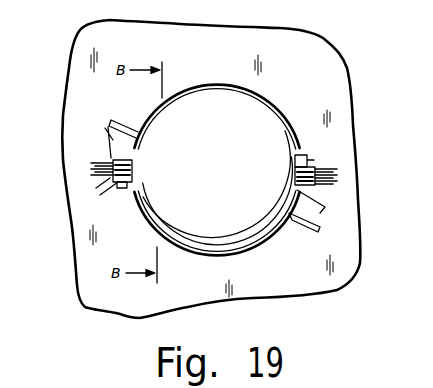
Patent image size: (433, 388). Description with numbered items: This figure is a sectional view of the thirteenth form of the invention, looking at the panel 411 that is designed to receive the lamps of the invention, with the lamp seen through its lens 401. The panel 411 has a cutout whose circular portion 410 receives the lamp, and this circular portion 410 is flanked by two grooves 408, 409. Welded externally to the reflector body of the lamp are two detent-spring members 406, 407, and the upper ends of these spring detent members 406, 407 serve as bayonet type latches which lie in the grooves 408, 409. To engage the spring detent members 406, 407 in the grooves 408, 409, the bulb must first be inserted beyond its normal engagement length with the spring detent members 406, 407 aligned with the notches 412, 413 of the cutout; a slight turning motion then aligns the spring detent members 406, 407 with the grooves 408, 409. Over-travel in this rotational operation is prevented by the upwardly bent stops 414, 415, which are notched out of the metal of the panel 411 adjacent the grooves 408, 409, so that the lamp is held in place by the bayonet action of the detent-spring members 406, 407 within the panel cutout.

The lens 401 is at (248, 122).
The detent-spring member 406 is at (108, 181).
The detent-spring member 407 is at (317, 164).
The groove 408 is at (100, 163).
The groove 409 is at (340, 178).
The circular portion 410 is at (257, 247).
The panel 411 is at (82, 261).
The notch 412 is at (111, 120).
The notch 413 is at (325, 212).
The stop 414 is at (118, 186).
The stop 415 is at (307, 162).